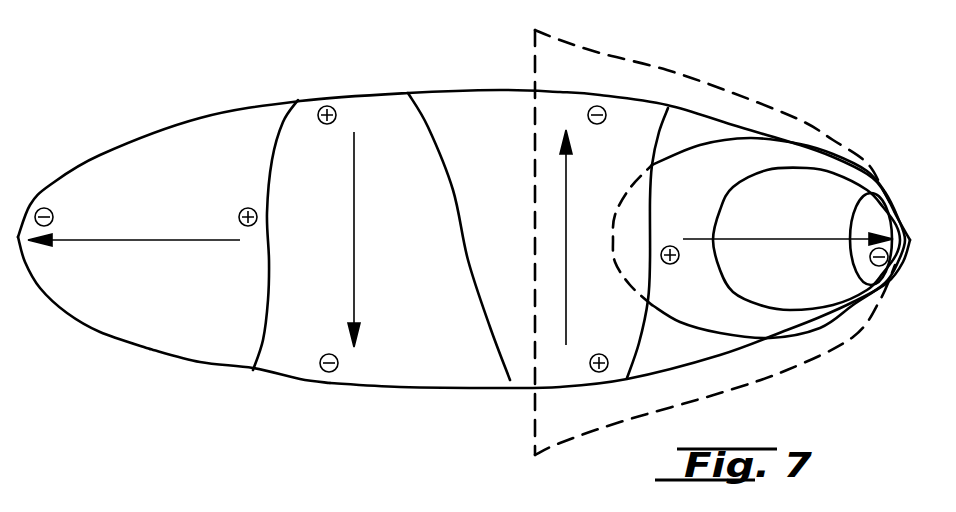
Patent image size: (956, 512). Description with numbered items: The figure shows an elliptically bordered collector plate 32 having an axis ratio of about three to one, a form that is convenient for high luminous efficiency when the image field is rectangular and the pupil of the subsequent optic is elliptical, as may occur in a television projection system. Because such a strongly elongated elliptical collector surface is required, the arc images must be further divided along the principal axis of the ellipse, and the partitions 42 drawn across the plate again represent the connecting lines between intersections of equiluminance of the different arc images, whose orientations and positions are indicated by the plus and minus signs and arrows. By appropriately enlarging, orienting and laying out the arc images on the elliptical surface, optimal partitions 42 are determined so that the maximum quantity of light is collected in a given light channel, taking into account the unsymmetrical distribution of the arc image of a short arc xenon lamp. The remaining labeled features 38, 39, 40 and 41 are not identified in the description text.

The elliptically bordered collector plate 32 is at (410, 392).
The front end region 38 is at (138, 327).
The rear end region 39 is at (300, 363).
The top surface 40 is at (477, 105).
The ring-shaped zone 41 is at (692, 127).
The partitions 42 is at (270, 277).